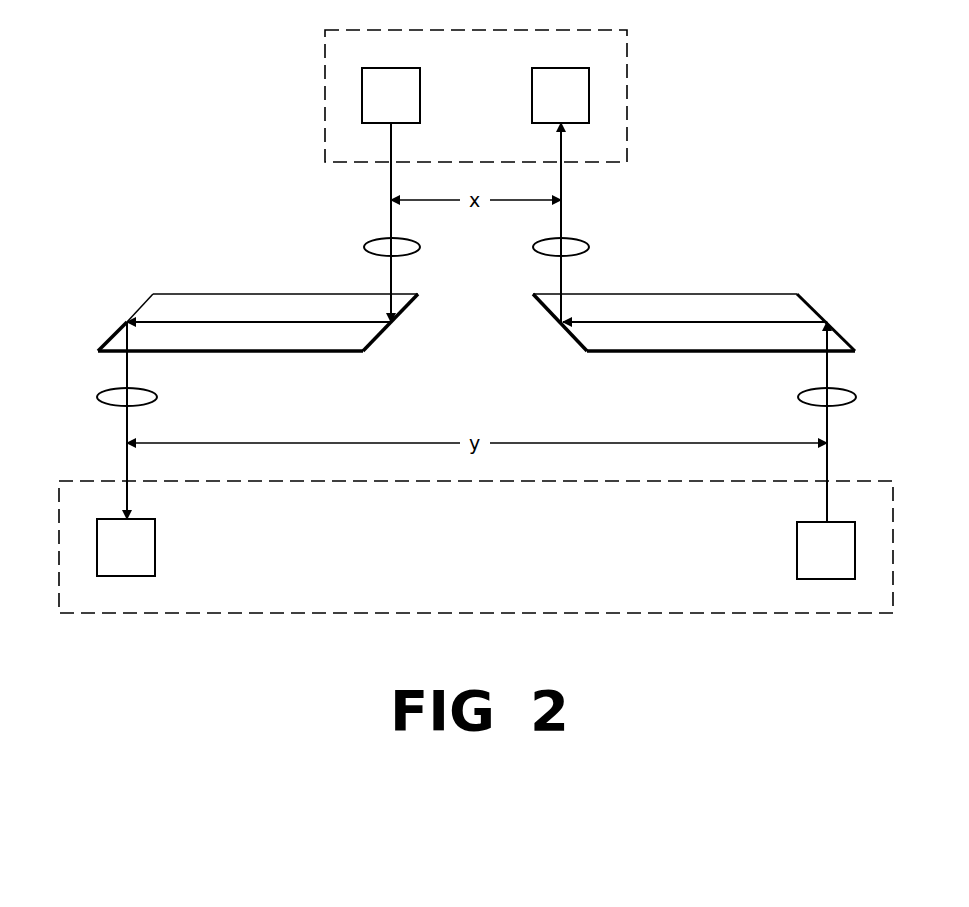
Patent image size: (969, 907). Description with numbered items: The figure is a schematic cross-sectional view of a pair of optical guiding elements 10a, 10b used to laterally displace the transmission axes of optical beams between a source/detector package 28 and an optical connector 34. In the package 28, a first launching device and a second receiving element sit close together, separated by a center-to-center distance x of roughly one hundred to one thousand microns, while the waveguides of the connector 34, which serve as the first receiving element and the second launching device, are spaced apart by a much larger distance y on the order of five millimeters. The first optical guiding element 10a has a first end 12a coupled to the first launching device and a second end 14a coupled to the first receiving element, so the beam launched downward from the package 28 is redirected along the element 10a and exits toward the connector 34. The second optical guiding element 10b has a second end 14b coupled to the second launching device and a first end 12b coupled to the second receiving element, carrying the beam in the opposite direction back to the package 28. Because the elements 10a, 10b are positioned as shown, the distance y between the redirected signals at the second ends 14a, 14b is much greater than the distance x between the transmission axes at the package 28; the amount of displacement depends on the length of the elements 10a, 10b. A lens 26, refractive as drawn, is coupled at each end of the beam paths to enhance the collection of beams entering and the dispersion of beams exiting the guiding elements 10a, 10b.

The first optical guiding element 10a is at (258, 322).
The second optical guiding element 10b is at (694, 322).
The first end of first optical guiding element 12a is at (353, 353).
The first end of second optical guiding element 12b is at (597, 353).
The second end of first optical guiding element 14a is at (162, 293).
The second end of second optical guiding element 14b is at (792, 293).
The lens 26 is at (375, 238).
The source/detector package 28 is at (494, 107).
The optical connector 34 is at (495, 563).